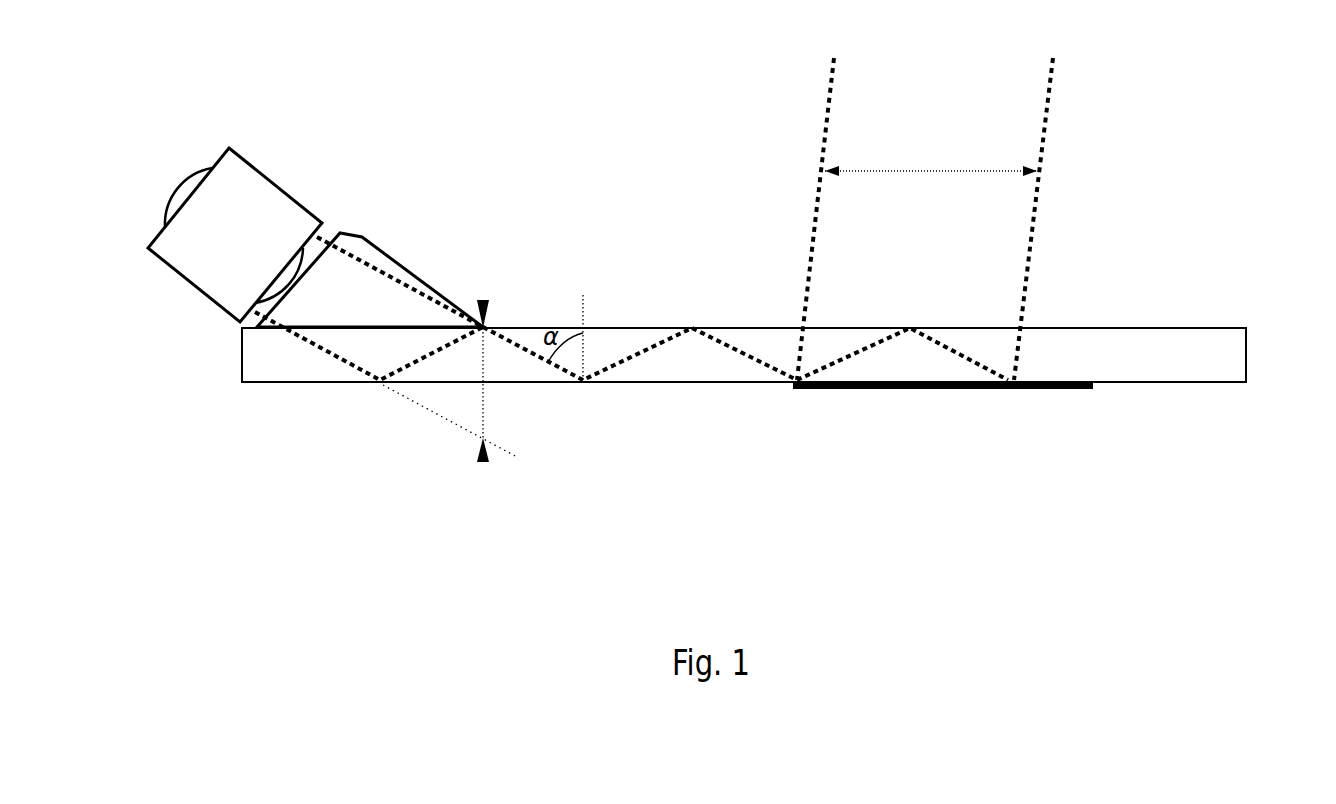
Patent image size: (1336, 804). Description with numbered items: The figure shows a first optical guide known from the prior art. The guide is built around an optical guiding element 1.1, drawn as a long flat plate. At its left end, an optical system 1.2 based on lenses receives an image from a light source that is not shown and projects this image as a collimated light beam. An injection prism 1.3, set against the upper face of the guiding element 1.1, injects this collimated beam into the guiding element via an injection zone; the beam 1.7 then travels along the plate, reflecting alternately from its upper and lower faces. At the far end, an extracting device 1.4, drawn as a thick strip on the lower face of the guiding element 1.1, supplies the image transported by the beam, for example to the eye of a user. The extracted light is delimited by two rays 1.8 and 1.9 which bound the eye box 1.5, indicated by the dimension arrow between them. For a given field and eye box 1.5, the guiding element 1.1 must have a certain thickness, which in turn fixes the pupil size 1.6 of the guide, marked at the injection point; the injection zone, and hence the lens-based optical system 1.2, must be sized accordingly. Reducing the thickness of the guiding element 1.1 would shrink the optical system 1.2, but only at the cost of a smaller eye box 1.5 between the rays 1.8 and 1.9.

The optical guiding element 1.1 is at (1187, 382).
The optical system based on lenses 1.2 is at (190, 282).
The injection prism 1.3 is at (360, 238).
The extracting device 1.4 is at (905, 388).
The eye box 1.5 is at (940, 173).
The pupil size 1.6 is at (483, 415).
The light beam path 1.7 is at (643, 352).
The ray 1.8 is at (813, 224).
The ray 1.9 is at (1037, 200).